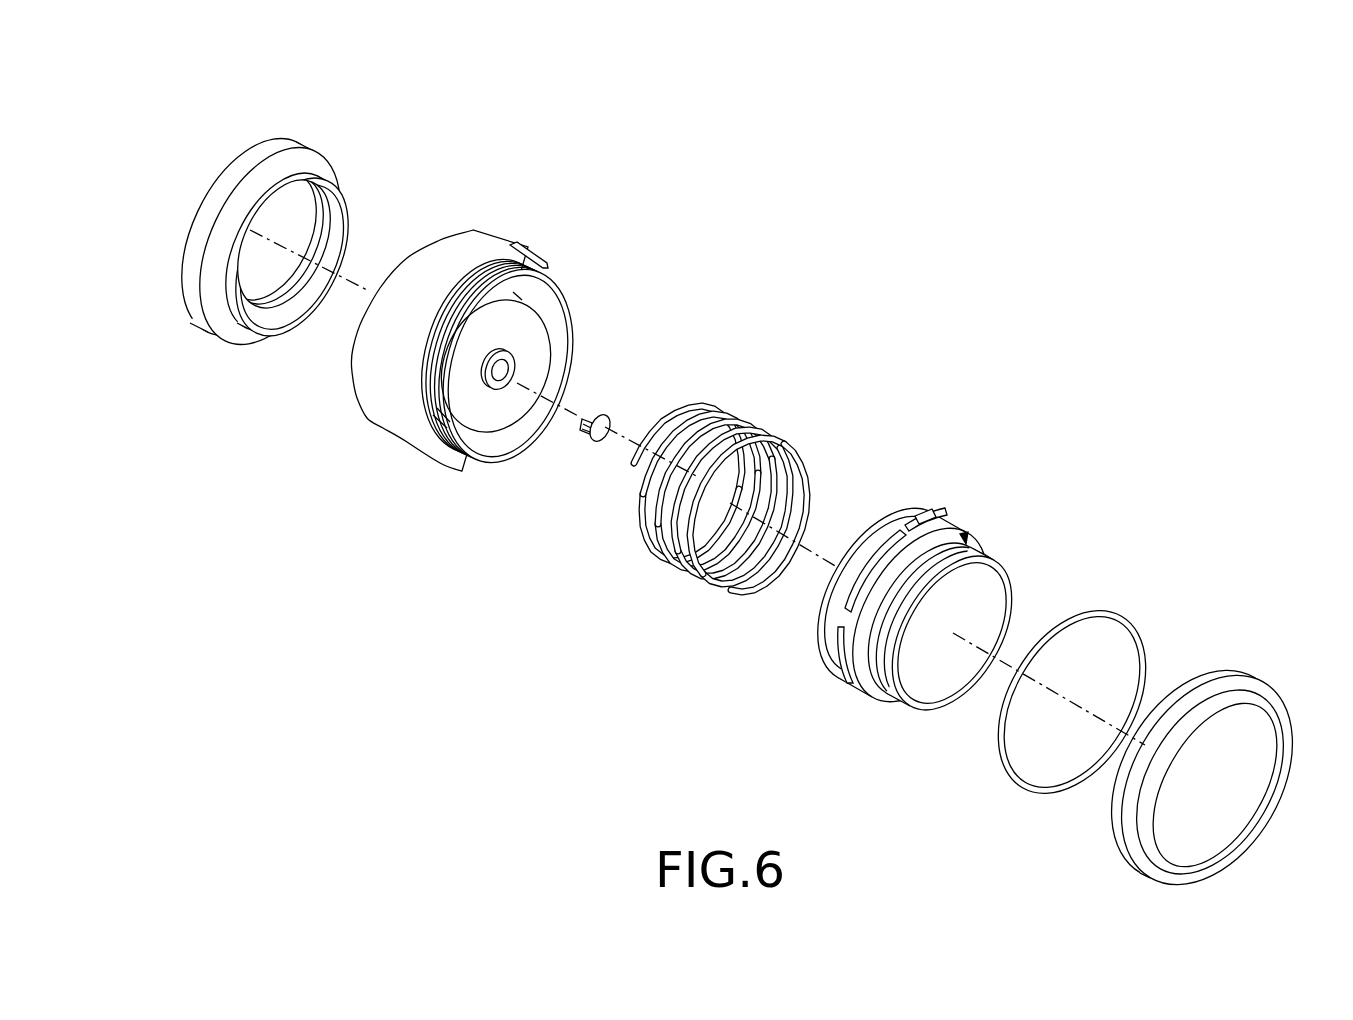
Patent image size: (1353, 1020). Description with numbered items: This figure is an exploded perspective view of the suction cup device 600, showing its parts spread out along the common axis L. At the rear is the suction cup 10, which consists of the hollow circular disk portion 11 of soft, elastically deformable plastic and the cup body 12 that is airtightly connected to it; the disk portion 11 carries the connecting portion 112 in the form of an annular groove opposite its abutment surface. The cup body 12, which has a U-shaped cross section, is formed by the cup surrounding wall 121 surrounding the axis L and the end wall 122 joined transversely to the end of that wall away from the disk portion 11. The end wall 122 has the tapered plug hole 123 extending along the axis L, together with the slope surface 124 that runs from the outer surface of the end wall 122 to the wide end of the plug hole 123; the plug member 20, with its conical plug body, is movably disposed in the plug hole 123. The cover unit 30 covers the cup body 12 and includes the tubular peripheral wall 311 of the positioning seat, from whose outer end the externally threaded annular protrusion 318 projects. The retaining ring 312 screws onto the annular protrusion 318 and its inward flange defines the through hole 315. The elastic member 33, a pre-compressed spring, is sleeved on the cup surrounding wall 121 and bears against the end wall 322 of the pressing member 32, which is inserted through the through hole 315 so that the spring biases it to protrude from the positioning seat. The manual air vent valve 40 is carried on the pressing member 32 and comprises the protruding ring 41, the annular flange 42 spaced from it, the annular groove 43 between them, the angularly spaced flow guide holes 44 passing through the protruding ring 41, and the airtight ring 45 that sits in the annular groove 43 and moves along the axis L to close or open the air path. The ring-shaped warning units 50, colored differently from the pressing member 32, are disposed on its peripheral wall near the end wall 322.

The suction cup device 600 is at (826, 254).
The suction cup 10 is at (271, 288).
The disk portion 11 is at (271, 259).
The connecting portion 112 is at (345, 190).
The cup body 12 is at (429, 367).
The cup surrounding wall 121 is at (446, 397).
The end wall 122 is at (532, 333).
The plug hole 123 is at (520, 365).
The slope surface 124 is at (498, 392).
The plug member 20 is at (612, 407).
The cover unit 30 is at (429, 326).
The peripheral wall 311 is at (440, 255).
The annular protrusion 318 is at (430, 388).
The elastic member 33 is at (764, 450).
The manual air vent valve 40 is at (872, 586).
The protruding ring 41 is at (935, 520).
The annular flange 42 is at (893, 523).
The annular groove 43 is at (830, 652).
The flow guide holes 44 is at (845, 618).
The warning unit 50 is at (965, 533).
The pressing member 32 is at (973, 579).
The end wall 322 is at (983, 600).
The airtight ring 45 is at (1103, 606).
The retaining ring 312 is at (1201, 755).
The through hole 315 is at (1272, 728).
The axis L is at (822, 557).